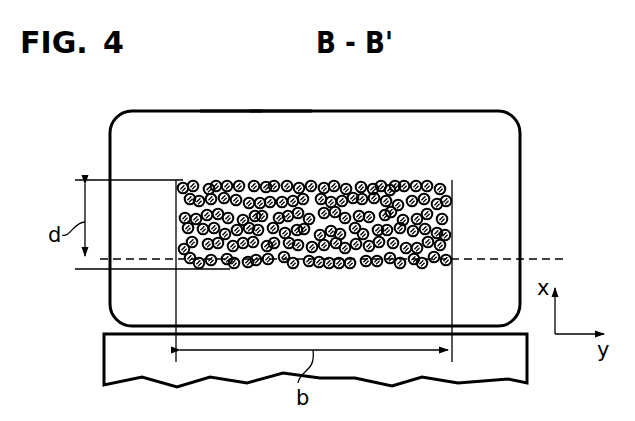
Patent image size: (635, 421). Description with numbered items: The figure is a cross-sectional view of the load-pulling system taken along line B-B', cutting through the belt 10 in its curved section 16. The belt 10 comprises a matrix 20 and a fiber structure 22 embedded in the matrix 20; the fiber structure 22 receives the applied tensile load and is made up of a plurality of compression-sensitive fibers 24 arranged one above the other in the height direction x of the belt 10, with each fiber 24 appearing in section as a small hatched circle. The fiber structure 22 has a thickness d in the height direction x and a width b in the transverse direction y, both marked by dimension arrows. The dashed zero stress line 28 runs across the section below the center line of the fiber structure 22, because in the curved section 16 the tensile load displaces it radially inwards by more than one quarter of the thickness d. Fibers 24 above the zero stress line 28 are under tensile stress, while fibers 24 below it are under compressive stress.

The belt 10 is at (157, 120).
The curved section 16 is at (207, 120).
The matrix 20 is at (257, 120).
The fiber structure 22 is at (350, 178).
The compression-sensitive fibers 24 is at (377, 182).
The zero stress line 28 is at (100, 262).